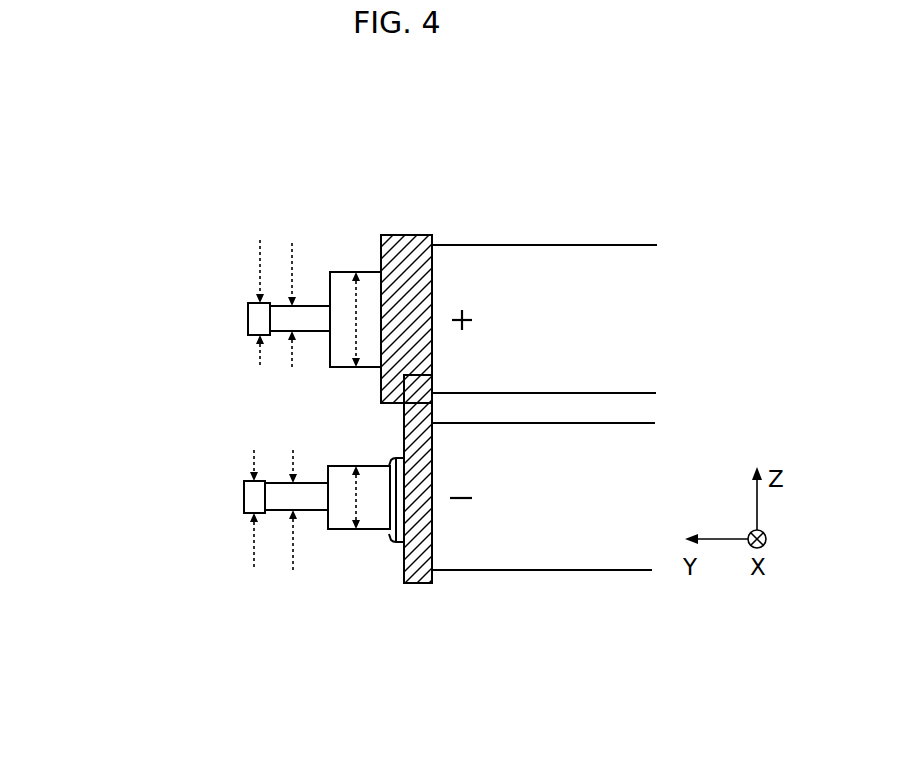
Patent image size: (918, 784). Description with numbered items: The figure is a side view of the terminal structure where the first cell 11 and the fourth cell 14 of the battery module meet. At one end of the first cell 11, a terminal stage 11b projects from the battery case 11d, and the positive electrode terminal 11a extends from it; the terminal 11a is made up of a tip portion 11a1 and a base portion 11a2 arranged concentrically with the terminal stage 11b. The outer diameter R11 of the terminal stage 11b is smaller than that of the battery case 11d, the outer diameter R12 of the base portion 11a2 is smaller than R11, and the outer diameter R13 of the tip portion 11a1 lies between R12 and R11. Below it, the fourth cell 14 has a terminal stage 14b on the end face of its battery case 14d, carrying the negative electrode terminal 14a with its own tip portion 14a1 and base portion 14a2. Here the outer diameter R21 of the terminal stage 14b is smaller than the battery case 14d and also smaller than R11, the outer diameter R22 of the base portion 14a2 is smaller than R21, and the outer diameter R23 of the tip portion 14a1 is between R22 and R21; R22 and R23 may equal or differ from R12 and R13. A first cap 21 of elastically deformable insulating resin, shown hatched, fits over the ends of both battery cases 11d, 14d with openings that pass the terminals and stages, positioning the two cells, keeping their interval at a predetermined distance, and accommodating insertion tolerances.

The first cell 11 is at (544, 272).
The positive electrode terminal 11a is at (208, 349).
The tip portion 11a1 is at (249, 320).
The base portion 11a2 is at (318, 326).
The terminal stage 11b is at (367, 270).
The battery case 11d is at (548, 244).
The fourth cell 14 is at (543, 541).
The negative electrode terminal 14a is at (208, 465).
The tip portion 14a1 is at (245, 490).
The base portion 14a2 is at (313, 494).
The terminal stage 14b is at (370, 531).
The battery case 14d is at (548, 571).
The first cap 21 is at (410, 250).
The outer diameter of the terminal stage R11 is at (352, 334).
The outer diameter of the base portion R12 is at (292, 255).
The outer diameter of the tip portion R13 is at (259, 248).
The outer diameter of the terminal stage R21 is at (353, 500).
The outer diameter of the base portion R22 is at (293, 564).
The outer diameter of the tip portion R23 is at (253, 550).